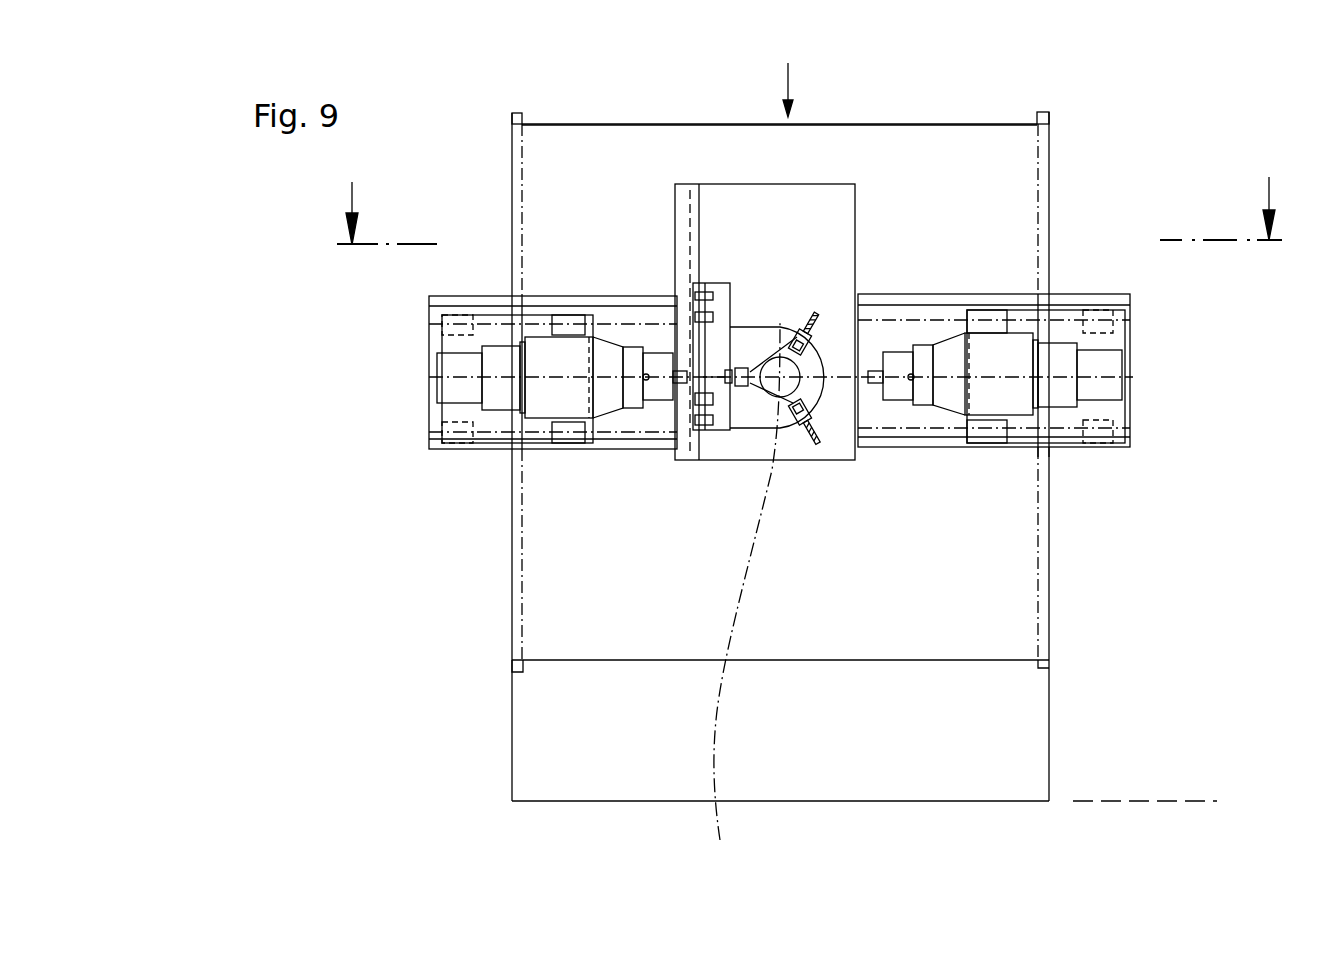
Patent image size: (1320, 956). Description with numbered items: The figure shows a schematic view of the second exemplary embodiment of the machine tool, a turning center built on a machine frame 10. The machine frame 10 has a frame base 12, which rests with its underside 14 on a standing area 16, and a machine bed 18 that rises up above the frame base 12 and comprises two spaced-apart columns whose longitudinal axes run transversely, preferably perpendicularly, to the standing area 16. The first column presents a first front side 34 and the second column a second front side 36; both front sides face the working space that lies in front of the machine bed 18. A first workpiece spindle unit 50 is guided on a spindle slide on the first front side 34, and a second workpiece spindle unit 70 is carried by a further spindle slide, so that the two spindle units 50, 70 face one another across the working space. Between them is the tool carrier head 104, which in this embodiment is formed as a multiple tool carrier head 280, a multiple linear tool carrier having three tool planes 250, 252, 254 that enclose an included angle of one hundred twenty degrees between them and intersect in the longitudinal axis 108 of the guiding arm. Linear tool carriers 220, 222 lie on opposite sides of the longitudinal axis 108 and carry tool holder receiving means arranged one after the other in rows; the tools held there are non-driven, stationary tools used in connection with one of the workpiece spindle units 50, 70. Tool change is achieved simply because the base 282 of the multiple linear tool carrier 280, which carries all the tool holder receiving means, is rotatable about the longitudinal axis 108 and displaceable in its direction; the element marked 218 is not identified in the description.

The machine frame 10 is at (1090, 147).
The frame base 12 is at (1005, 698).
The underside 14 is at (993, 803).
The standing area 16 is at (1186, 797).
The machine bed 18 is at (952, 147).
The first front side 34 is at (555, 213).
The second front side 36 is at (1000, 208).
The first workpiece spindle unit 50 is at (545, 383).
The second workpiece spindle unit 70 is at (1015, 358).
The tool carrier head 104 is at (805, 328).
The longitudinal axis 108 is at (742, 598).
The tool holder 218 is at (763, 330).
The linear tool carrier 220 is at (820, 318).
The linear tool carrier 222 is at (797, 430).
The tool plane 250 is at (744, 330).
The tool plane 252 is at (810, 353).
The tool plane 254 is at (810, 387).
The multiple tool carrier head 280 is at (760, 325).
The base 282 is at (780, 320).